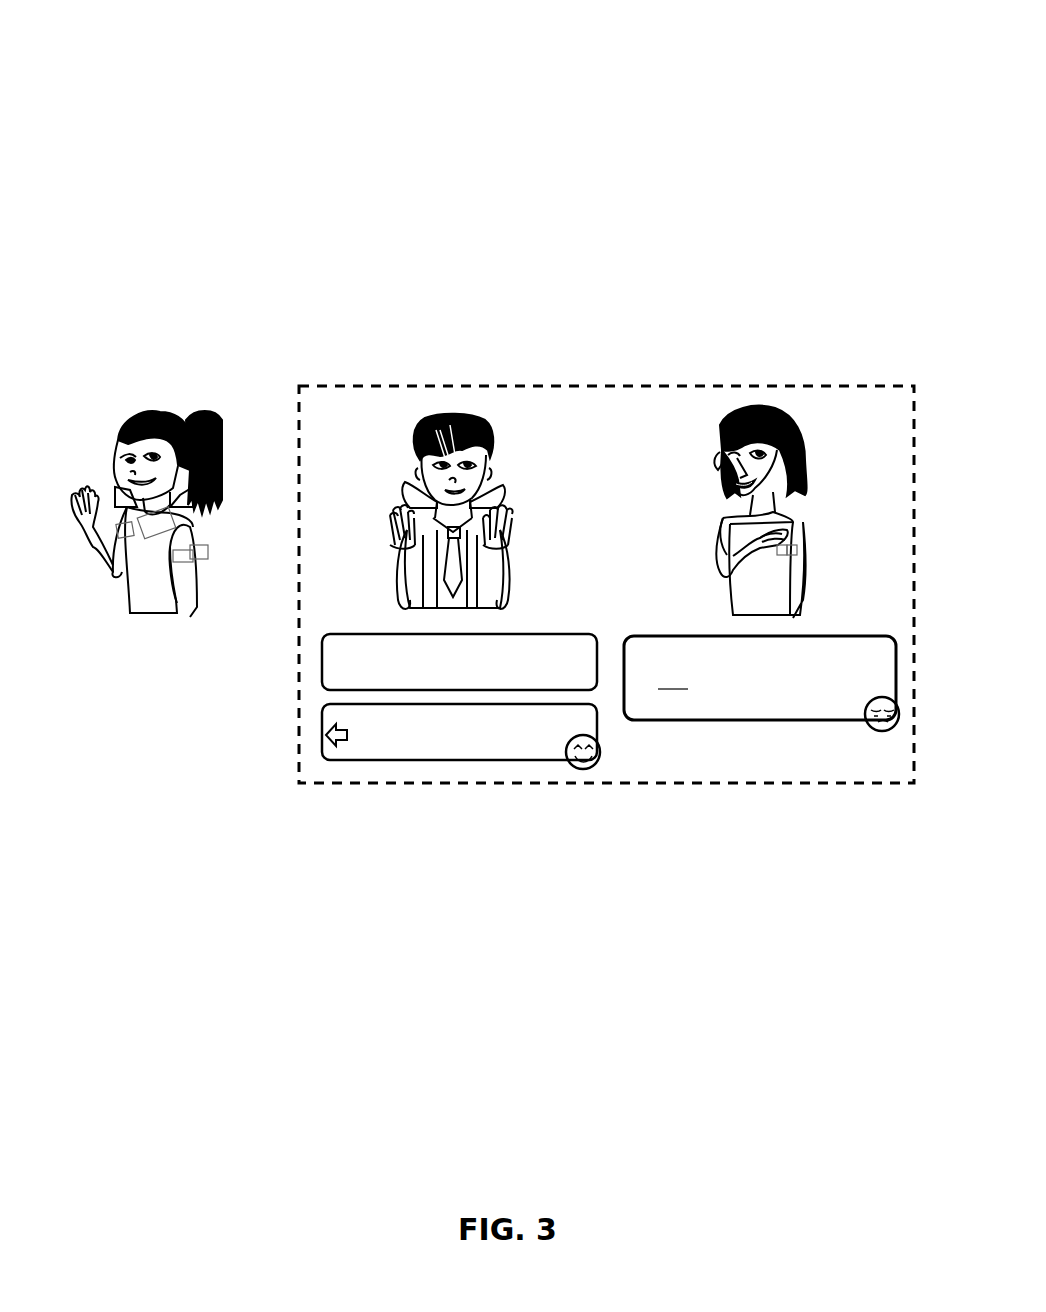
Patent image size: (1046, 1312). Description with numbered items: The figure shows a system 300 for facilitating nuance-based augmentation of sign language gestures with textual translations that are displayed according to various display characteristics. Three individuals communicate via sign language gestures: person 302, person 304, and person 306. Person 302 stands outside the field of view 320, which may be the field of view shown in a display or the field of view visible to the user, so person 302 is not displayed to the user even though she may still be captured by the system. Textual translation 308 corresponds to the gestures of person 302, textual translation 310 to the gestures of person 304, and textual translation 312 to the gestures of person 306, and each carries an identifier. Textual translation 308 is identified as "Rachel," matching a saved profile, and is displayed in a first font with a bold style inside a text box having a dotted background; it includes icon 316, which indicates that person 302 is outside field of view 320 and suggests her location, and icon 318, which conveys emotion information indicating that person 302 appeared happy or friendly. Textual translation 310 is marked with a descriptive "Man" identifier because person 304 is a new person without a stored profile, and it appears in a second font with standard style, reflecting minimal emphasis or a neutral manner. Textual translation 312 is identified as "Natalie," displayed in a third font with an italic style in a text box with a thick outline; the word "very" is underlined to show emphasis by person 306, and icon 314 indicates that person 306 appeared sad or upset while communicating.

The system 300 is at (531, 70).
The person 302 is at (109, 457).
The person 304 is at (408, 456).
The person 306 is at (715, 457).
The textual translation 308 is at (318, 737).
The textual translation 310 is at (318, 665).
The textual translation 312 is at (899, 680).
The icon 314 is at (882, 735).
The icon 316 is at (348, 748).
The icon 318 is at (584, 770).
The field of view 320 is at (822, 788).